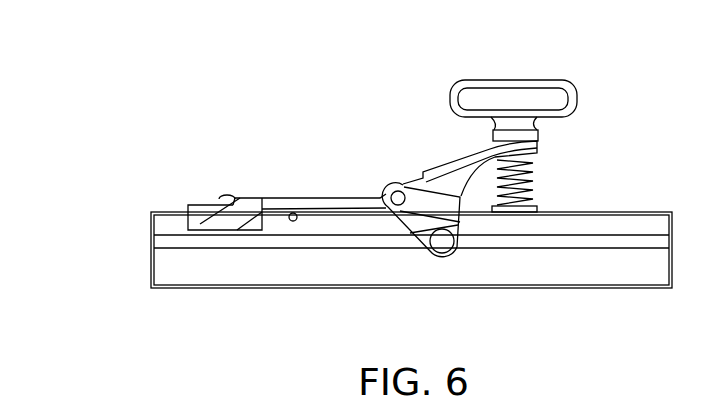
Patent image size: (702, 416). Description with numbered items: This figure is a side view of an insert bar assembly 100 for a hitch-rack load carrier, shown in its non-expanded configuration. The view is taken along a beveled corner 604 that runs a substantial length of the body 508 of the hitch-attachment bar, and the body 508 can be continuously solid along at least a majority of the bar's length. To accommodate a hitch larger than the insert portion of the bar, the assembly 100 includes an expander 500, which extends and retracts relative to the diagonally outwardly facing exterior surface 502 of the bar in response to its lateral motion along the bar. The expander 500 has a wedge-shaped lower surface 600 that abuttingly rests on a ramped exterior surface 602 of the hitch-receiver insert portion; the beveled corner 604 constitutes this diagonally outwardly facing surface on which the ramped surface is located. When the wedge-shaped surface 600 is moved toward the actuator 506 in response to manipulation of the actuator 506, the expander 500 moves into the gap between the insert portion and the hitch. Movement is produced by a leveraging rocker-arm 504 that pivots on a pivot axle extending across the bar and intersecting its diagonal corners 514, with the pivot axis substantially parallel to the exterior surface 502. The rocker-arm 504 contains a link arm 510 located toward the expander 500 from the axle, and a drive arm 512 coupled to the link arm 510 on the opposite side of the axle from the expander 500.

The insert bar assembly 100 is at (283, 62).
The expander 500 is at (329, 186).
The diagonally outwardly facing exterior surface 502 is at (317, 223).
The leveraging rocker-arm 504 is at (435, 165).
The actuator 506 is at (528, 80).
The body 508 is at (513, 263).
The link arm 510 is at (392, 188).
The drive arm 512 is at (455, 163).
The diagonal corners 514 is at (581, 257).
The wedge-shaped lower surface 600 is at (257, 213).
The ramped exterior surface 602 is at (262, 200).
The beveled corner 604 is at (371, 216).